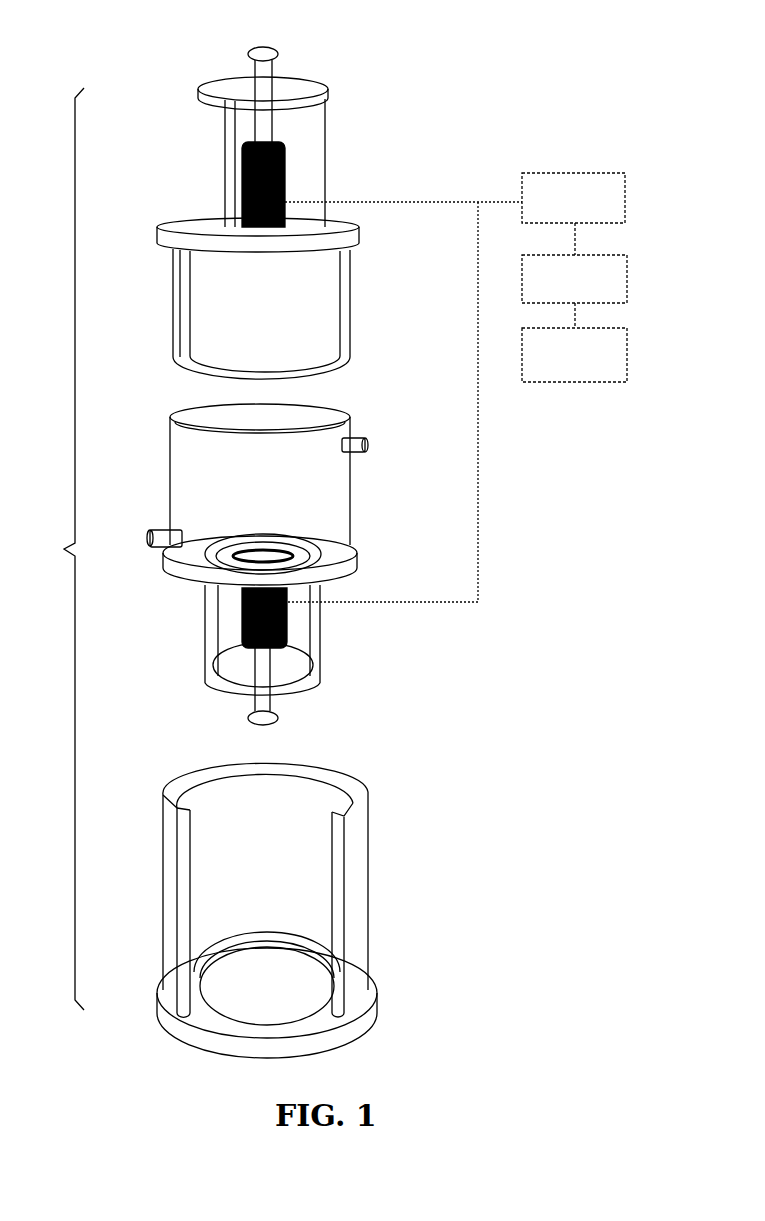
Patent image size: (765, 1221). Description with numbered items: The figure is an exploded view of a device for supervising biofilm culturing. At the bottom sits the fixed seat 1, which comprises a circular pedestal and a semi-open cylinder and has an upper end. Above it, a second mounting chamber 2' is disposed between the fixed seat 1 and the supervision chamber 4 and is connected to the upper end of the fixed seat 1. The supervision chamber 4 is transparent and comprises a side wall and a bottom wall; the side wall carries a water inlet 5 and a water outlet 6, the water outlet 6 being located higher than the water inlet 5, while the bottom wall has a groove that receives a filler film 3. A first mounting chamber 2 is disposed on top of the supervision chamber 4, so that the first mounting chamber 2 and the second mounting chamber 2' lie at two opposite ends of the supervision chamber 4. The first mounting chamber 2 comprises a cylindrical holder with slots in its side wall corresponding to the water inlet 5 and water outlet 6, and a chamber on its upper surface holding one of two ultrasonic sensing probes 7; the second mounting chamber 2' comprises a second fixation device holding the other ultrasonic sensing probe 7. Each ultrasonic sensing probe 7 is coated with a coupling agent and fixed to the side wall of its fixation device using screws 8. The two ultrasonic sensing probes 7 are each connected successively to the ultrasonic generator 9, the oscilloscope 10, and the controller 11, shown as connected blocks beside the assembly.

The fixed seat 1 is at (373, 1015).
The first mounting chamber 2 is at (285, 152).
The second mounting chamber 2' is at (306, 640).
The filler film 3 is at (292, 556).
The supervision chamber 4 is at (170, 470).
The water inlet 5 is at (150, 538).
The water outlet 6 is at (366, 447).
The ultrasonic sensing probe 7 is at (287, 185).
The screw 8 is at (275, 55).
The ultrasonic generator 9 is at (573, 198).
The oscilloscope 10 is at (574, 263).
The controller 11 is at (574, 342).